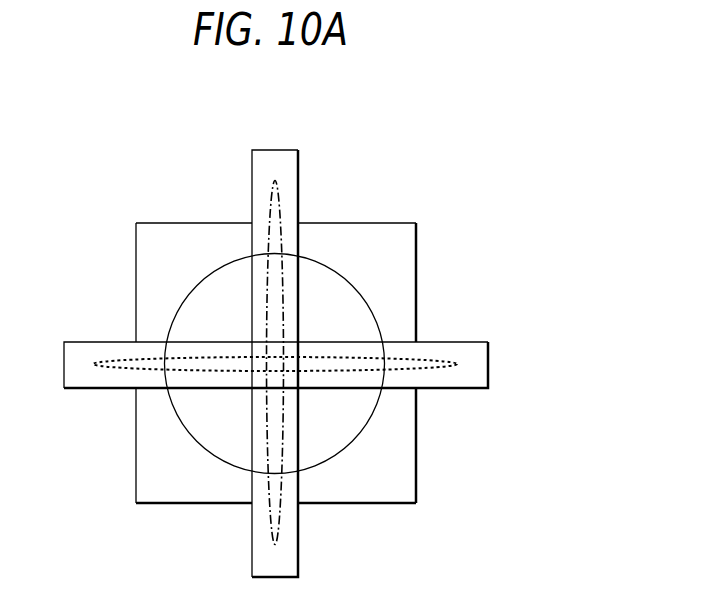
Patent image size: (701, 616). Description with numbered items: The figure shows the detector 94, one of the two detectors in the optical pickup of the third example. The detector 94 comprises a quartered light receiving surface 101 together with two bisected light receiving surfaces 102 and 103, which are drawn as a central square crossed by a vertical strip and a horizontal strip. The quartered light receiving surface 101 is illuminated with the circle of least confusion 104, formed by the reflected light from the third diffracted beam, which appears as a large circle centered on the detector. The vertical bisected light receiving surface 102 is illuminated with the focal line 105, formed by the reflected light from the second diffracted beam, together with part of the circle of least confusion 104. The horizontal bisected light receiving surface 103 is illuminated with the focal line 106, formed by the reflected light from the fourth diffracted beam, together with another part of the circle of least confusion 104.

The detector 94 is at (430, 207).
The quartered light receiving surface 101 is at (193, 223).
The bisected light receiving surface 102 is at (272, 150).
The bisected light receiving surface 103 is at (89, 342).
The circle of least confusion 104 is at (373, 418).
The focal line 105 is at (280, 537).
The focal line 106 is at (435, 370).